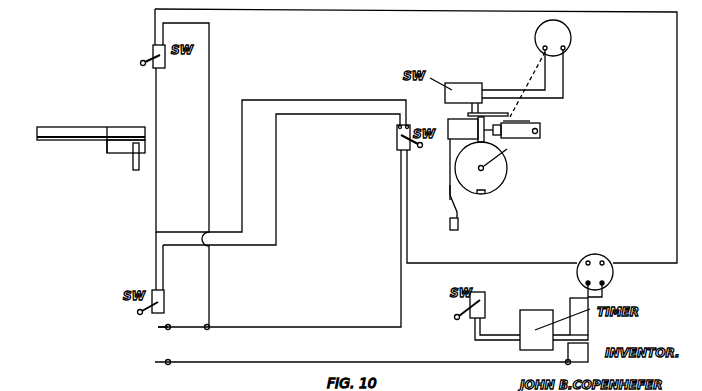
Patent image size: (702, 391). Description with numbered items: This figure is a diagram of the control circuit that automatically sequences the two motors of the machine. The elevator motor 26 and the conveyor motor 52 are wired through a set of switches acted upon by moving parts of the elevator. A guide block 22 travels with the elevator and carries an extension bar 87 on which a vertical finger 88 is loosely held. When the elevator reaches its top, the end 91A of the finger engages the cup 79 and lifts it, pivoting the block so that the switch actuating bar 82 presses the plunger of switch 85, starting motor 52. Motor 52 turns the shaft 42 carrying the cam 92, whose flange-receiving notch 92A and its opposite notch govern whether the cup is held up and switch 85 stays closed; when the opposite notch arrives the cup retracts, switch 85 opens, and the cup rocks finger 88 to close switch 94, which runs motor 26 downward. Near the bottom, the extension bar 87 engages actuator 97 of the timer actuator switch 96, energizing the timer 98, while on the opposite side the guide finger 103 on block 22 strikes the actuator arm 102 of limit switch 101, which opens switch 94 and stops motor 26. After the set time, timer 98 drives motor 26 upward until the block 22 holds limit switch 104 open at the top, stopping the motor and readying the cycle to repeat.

The limit switch 104 is at (166, 63).
The guide block 22 is at (112, 148).
The guide finger 103 is at (140, 164).
The limit switch 101 is at (166, 306).
The actuator arm 102 is at (141, 315).
The switch 94 is at (397, 133).
The switch 85 is at (457, 83).
The switch actuating bar 82 is at (494, 113).
The cup 79 is at (468, 121).
The motor 52 is at (572, 33).
The finger end 91A is at (451, 155).
The vertical finger 88 is at (450, 192).
The extension bar 87 is at (450, 223).
The cam 92 is at (498, 190).
The cam notch 92A is at (511, 161).
The shaft 42 is at (484, 168).
The motor 26 is at (600, 258).
The actuator 97 is at (457, 313).
The timer actuator switch 96 is at (486, 305).
The timer 98 is at (529, 308).